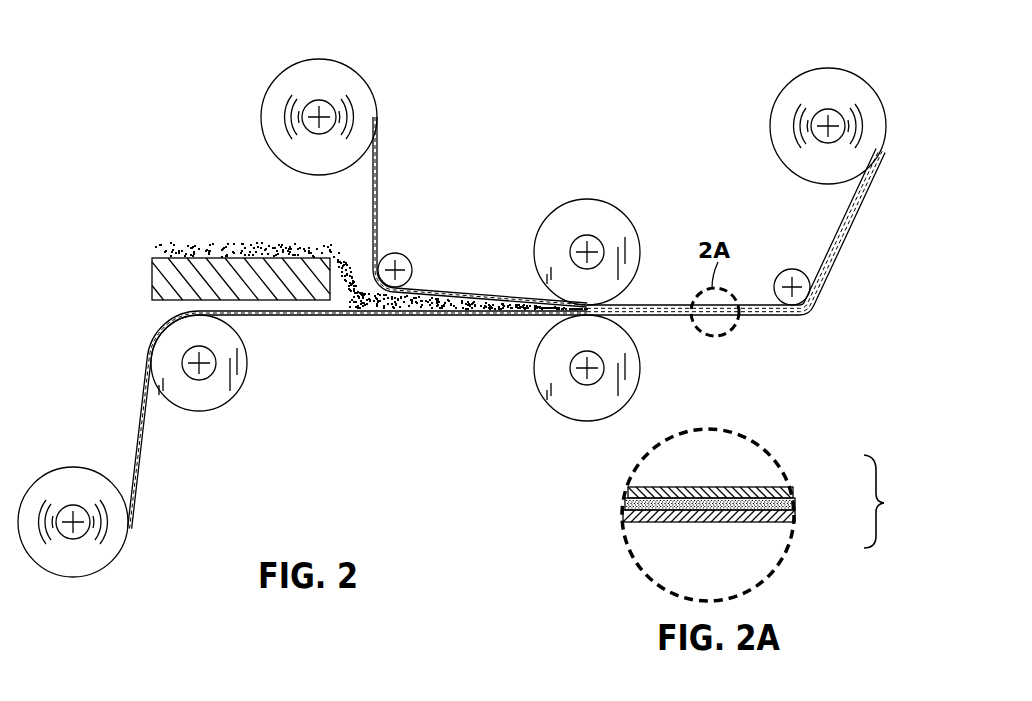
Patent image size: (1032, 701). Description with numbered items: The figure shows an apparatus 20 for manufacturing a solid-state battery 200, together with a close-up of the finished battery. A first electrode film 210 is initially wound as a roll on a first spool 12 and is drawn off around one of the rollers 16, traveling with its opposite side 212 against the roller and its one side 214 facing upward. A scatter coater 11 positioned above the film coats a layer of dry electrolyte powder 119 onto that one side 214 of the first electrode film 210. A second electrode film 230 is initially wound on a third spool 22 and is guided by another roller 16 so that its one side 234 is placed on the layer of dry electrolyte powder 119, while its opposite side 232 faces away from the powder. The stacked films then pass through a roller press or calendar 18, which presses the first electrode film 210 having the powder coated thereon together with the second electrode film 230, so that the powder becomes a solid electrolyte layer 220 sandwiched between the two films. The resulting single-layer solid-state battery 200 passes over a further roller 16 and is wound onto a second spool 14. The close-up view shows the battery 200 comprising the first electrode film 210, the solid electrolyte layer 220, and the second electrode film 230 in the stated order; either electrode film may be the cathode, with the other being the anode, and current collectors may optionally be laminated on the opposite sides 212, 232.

In FIG. 2, the apparatus 20 is at (142, 58).
In FIG. 2, the third spool 22 is at (340, 68).
In FIG. 2, the opposite side of second electrode film 232 is at (381, 169).
In FIG. 2, the one side of second electrode film 234 is at (374, 201).
In FIG. 2, the second electrode film 230 is at (476, 291).
In FIG. 2A, the second electrode film 230 is at (768, 492).
In FIG. 2, the scatter coater 11 is at (165, 272).
In FIG. 2, the dry electrolyte powder 119 is at (353, 318).
In FIG. 2, the rollers 16 is at (403, 258).
In FIG. 2, the roller press or calendar 18 is at (582, 210).
In FIG. 2, the first electrode film 210 is at (291, 318).
In FIG. 2A, the first electrode film 210 is at (777, 516).
In FIG. 2, the opposite side of first electrode film 212 is at (145, 455).
In FIG. 2, the one side of first electrode film 214 is at (136, 426).
In FIG. 2, the solid electrolyte layer 220 is at (666, 320).
In FIG. 2A, the solid electrolyte layer 220 is at (795, 504).
In FIG. 2, the second spool 14 is at (811, 86).
In FIG. 2, the first spool 12 is at (84, 565).
In FIG. 2A, the solid-state battery 200 is at (778, 501).